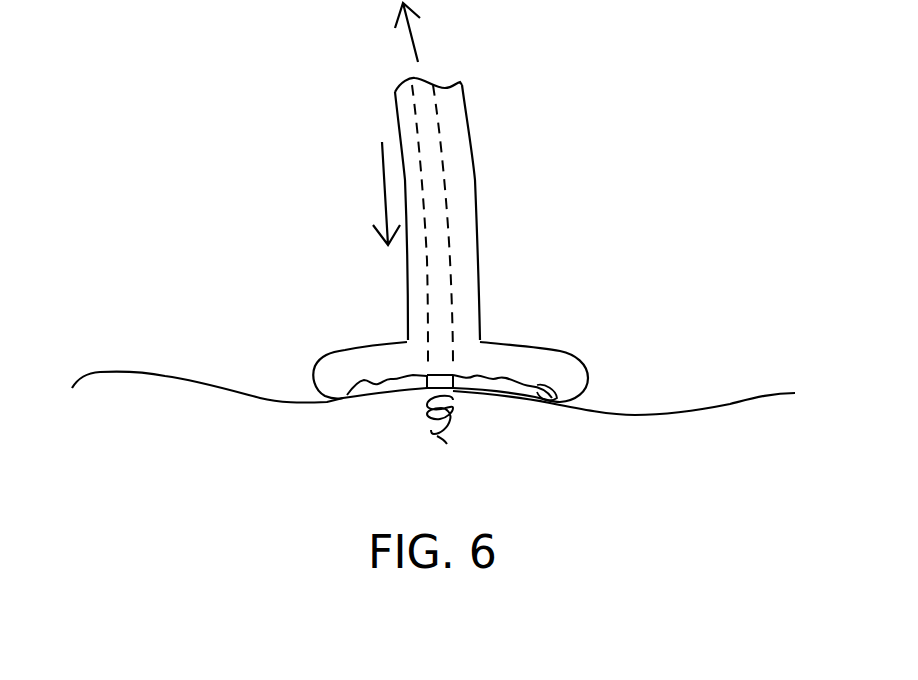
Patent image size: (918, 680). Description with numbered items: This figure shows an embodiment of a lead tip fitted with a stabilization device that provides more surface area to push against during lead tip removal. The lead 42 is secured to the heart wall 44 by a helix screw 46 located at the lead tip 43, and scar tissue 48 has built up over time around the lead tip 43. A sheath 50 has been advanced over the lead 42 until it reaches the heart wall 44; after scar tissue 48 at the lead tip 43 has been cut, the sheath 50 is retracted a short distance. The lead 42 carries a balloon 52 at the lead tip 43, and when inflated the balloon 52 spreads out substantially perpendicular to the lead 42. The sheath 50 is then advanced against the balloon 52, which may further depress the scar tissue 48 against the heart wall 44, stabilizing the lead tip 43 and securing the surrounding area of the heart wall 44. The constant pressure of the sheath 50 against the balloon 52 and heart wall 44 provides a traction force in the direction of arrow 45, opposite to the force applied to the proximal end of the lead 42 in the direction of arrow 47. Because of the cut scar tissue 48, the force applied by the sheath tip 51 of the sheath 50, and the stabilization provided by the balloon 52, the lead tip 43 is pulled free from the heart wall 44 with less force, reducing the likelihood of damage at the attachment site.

The lead 42 is at (442, 143).
The lead tip 43 is at (427, 383).
The heart wall 44 is at (663, 416).
The arrow 45 is at (385, 188).
The helix screw 46 is at (445, 444).
The arrow 47 is at (418, 52).
The scar tissue 48 is at (550, 400).
The sheath 50 is at (473, 212).
The sheath tip 51 is at (475, 330).
The balloon 52 is at (513, 345).